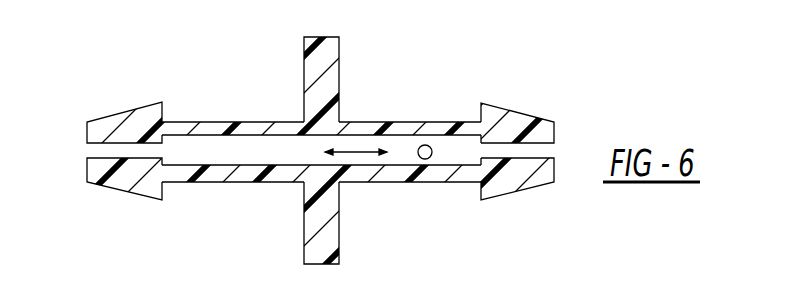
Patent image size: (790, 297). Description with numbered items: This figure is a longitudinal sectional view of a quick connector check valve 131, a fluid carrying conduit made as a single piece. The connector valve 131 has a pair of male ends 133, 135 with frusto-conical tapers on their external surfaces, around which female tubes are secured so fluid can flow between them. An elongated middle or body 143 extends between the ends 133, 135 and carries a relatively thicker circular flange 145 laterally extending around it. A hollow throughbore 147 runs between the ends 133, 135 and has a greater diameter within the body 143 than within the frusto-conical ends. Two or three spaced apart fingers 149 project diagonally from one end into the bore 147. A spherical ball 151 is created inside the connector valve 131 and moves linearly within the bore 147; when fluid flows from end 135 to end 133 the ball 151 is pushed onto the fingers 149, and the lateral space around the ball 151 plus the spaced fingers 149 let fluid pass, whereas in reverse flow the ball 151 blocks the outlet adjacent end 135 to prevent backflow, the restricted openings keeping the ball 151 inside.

The quick connector check valve 131 is at (338, 139).
The male end 133 is at (554, 135).
The male end 135 is at (87, 128).
The body 143 is at (248, 172).
The circular flange 145 is at (328, 84).
The hollow throughbore 147 is at (243, 148).
The fingers 149 is at (479, 163).
The spherical ball 151 is at (425, 152).